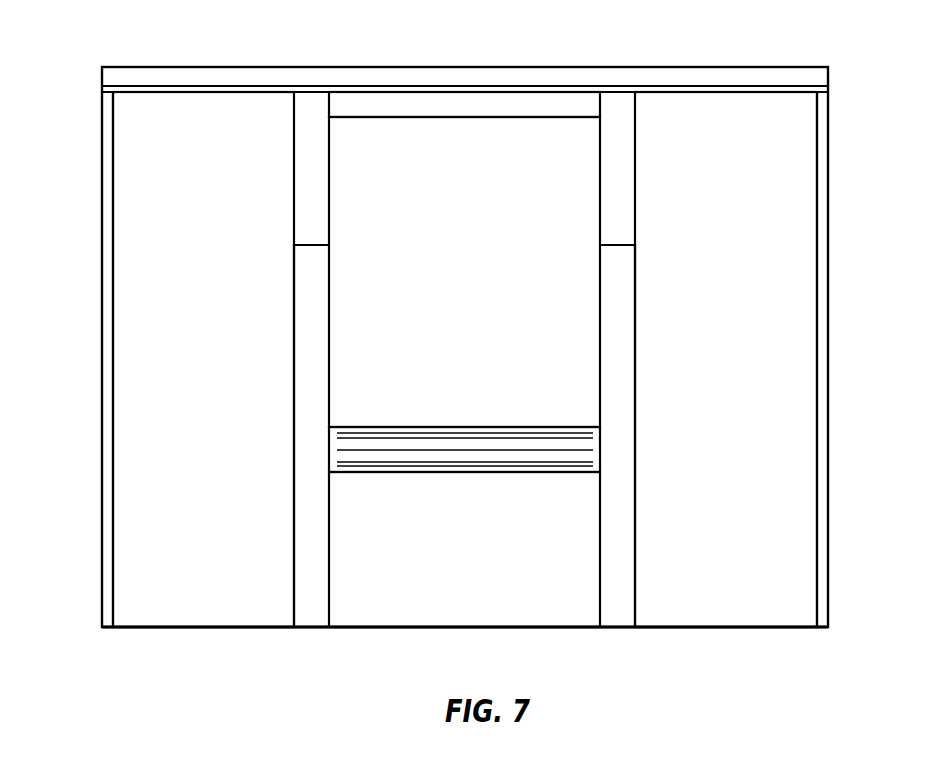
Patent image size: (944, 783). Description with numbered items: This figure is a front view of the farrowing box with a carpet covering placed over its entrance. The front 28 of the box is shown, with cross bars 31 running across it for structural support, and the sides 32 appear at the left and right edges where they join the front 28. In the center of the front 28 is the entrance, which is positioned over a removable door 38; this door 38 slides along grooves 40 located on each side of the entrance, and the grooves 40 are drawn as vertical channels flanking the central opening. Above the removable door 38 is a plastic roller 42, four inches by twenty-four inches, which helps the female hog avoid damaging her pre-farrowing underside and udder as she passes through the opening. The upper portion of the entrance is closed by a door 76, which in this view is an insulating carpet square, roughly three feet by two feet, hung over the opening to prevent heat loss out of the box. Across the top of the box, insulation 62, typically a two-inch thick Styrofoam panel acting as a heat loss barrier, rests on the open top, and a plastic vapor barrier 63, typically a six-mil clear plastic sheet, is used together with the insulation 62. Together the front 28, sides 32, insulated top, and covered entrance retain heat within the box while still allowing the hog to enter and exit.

The front 28 is at (221, 384).
The cross bars 31 is at (434, 105).
The sides 32 is at (101, 453).
The removable door 38 is at (483, 559).
The grooves 40 is at (310, 245).
The plastic roller 42 is at (502, 462).
The insulation 62 is at (619, 67).
The plastic vapor barrier 63 is at (713, 86).
The door 76 is at (483, 208).